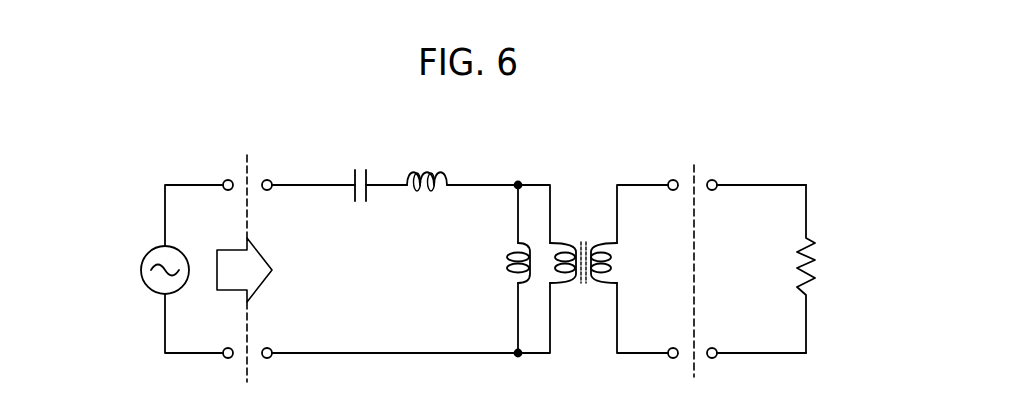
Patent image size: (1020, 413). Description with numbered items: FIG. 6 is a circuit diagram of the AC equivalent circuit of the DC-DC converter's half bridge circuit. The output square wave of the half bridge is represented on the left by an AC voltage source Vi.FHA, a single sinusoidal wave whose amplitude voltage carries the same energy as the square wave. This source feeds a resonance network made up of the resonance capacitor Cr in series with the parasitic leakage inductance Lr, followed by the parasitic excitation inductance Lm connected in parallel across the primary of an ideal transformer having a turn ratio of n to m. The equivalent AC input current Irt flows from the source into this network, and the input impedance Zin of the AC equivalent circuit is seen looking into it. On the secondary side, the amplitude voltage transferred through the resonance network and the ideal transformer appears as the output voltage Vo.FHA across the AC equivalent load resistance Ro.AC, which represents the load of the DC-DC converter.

The AC voltage source Vi.FHA is at (152, 203).
The input impedance Zin is at (244, 270).
The equivalent AC input current Irt is at (332, 202).
The resonance capacitor Cr is at (362, 200).
The leakage inductance Lr is at (427, 197).
The excitation inductance Lm is at (499, 269).
The output voltage of the AC equivalent circuit Vo.FHA is at (695, 202).
The AC equivalent load resistance Ro.AC is at (843, 269).